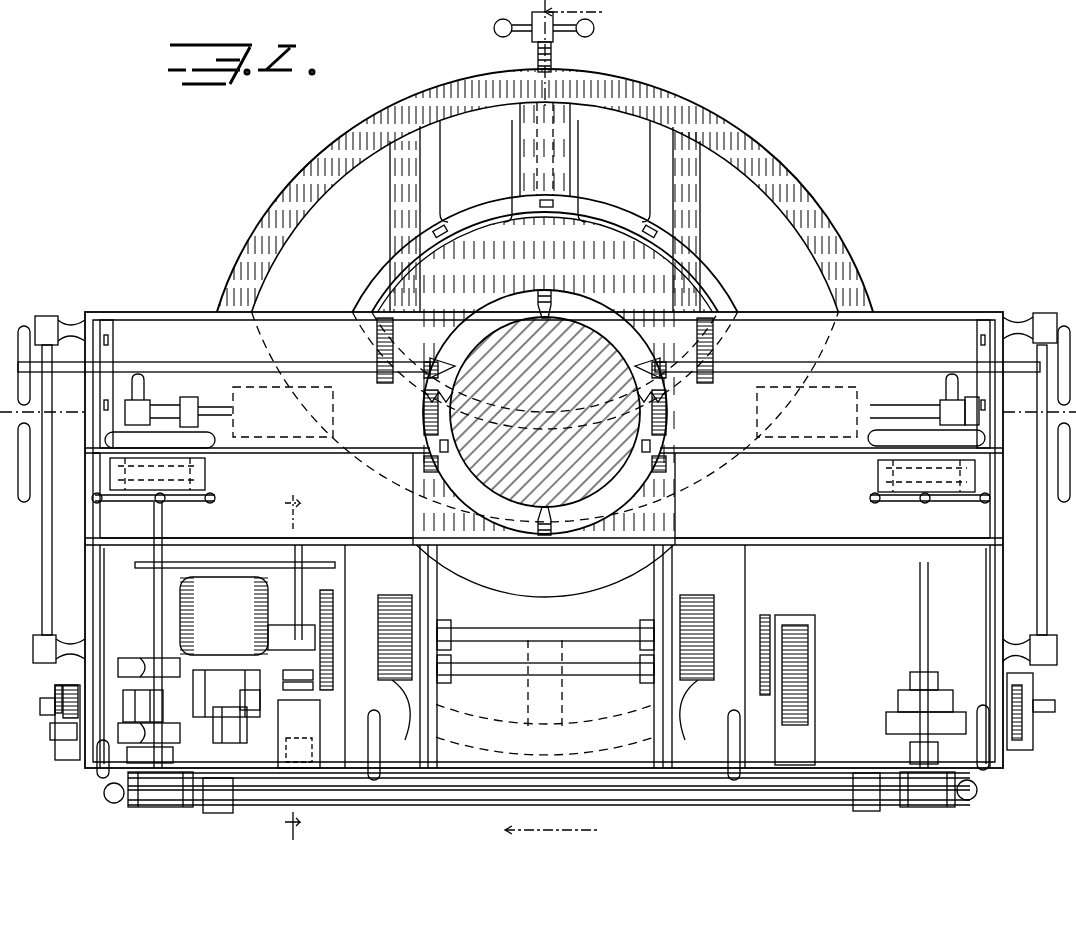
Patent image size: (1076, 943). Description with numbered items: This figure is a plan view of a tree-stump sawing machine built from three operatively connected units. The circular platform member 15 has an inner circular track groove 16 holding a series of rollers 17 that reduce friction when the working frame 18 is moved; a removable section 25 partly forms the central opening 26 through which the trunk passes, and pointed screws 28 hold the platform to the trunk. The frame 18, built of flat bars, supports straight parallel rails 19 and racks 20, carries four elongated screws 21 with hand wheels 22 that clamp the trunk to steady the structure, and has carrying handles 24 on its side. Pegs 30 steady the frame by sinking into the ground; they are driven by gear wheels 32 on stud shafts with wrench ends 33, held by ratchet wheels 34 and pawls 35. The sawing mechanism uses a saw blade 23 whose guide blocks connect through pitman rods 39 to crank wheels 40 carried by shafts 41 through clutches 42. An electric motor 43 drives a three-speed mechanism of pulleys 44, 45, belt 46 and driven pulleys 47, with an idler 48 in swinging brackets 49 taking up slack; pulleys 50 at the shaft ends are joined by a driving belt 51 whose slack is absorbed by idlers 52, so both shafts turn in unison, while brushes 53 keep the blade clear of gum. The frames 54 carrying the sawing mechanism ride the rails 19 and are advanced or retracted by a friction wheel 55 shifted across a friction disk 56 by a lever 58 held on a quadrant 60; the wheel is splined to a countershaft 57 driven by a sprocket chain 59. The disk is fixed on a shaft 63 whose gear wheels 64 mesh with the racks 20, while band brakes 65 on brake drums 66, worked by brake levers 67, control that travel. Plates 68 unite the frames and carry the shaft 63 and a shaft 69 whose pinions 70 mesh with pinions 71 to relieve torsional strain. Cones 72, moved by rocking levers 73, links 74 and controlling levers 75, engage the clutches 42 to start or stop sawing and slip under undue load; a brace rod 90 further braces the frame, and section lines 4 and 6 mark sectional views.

The section line 4- 4 is at (566, 421).
The section line 6- 6 is at (286, 658).
The platform member 15 is at (825, 238).
The inner circular track groove 16 is at (722, 290).
The rollers 17 is at (738, 307).
The working frame 18 is at (93, 432).
The rails 19 is at (113, 352).
The racks 20 is at (377, 343).
The elongated screws 21 is at (28, 468).
The hand wheels 22 is at (538, 483).
The saw blade 23 is at (666, 420).
The carrying handles 24 is at (1040, 588).
The removable section 25 is at (632, 88).
The central opening 26 is at (586, 300).
The pointed screws 28 is at (552, 522).
The pegs 30 is at (72, 735).
The gear wheels 32 is at (63, 690).
The wrench ends 33 is at (44, 712).
The ratchet wheels 34 is at (55, 698).
The pawls 35 is at (55, 725).
The pitman rods 39 is at (912, 418).
The crank wheels 40 is at (868, 438).
The shafts 41 is at (920, 628).
The clutches 42 is at (878, 480).
The electric motor 43 is at (200, 610).
The pulley 44 is at (258, 710).
The pulley 45 is at (236, 745).
The belt 46 is at (215, 730).
The driven pulleys 47 is at (140, 705).
The idler 48 is at (162, 714).
The swinging brackets 49 is at (145, 748).
The pulleys 50 is at (930, 808).
The driving belt 51 is at (415, 790).
The idlers 52 is at (862, 811).
The brushes 53 is at (648, 452).
The frames 54 is at (675, 542).
The friction wheel 55 is at (290, 634).
The friction disk 56 is at (312, 600).
The countershaft 57 is at (333, 605).
The lever 58 is at (315, 690).
The sprocket chain 59 is at (230, 562).
The quadrant 60 is at (320, 728).
The shaft 63 is at (480, 641).
The gear wheels 64 is at (690, 585).
The band brakes 65 is at (725, 630).
The brake drums 66 is at (690, 712).
The brake levers 67 is at (736, 780).
The plates 68 is at (605, 690).
The shaft 69 is at (512, 676).
The pinions 70 is at (652, 683).
The pinions 71 is at (654, 640).
The cones 72 is at (955, 505).
The rocking levers 73 is at (905, 502).
The links 74 is at (986, 638).
The controlling levers 75 is at (976, 794).
The brace rod 90 is at (790, 800).